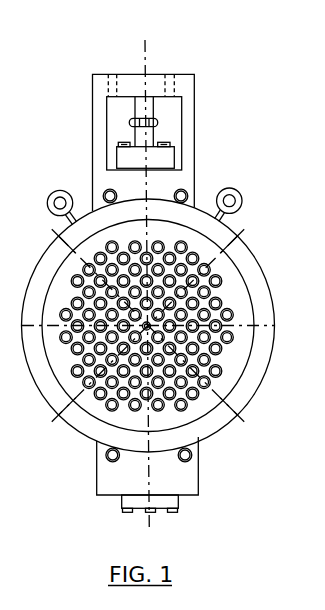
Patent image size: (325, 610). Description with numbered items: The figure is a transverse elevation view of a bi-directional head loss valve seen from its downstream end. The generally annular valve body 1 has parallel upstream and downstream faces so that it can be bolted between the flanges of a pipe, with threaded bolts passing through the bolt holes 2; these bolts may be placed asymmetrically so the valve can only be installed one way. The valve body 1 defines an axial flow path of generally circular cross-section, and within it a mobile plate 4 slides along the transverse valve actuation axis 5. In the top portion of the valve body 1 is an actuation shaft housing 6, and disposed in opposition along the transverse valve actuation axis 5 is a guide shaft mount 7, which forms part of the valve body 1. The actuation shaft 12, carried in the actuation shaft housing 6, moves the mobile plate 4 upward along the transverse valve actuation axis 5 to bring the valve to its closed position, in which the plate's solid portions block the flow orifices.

The valve body 1 is at (259, 254).
The bolt holes 2 is at (157, 97).
The mobile plate 4 is at (245, 306).
The transverse valve actuation axis 5 is at (150, 43).
The actuation shaft housing 6 is at (198, 132).
The guide shaft mount 7 is at (198, 497).
The actuation shaft 12 is at (160, 108).